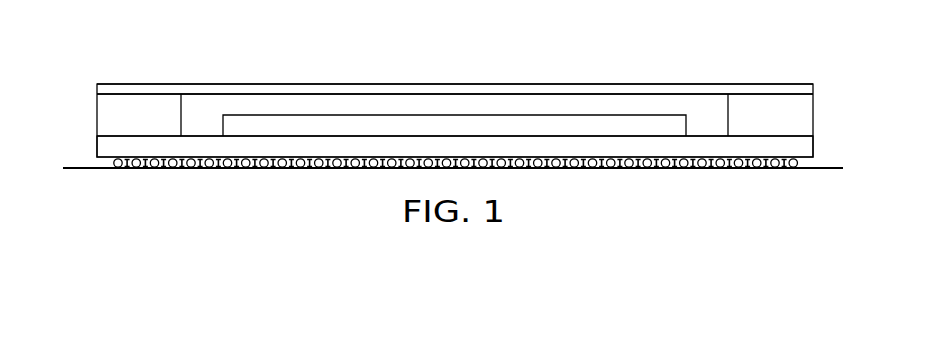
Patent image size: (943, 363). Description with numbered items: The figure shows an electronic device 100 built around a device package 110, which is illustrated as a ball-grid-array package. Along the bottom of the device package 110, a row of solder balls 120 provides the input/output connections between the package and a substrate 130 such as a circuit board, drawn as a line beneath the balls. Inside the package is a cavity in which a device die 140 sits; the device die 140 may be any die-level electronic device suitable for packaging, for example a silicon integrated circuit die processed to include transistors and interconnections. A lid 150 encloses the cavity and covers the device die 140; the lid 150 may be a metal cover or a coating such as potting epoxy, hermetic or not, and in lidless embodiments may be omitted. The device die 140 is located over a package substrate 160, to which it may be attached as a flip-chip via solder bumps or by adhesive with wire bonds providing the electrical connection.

The electronic device 100 is at (304, 59).
The device package 110 is at (90, 85).
The solder balls 120 is at (103, 166).
The substrate 130 is at (823, 170).
The device die 140 is at (392, 100).
The lid 150 is at (453, 83).
The package substrate 160 is at (815, 146).